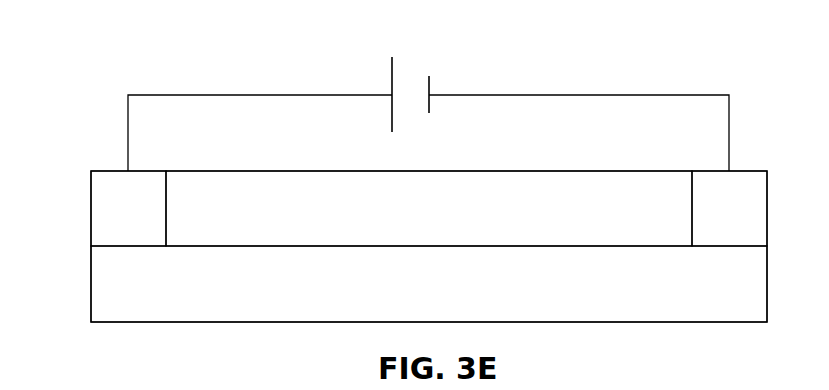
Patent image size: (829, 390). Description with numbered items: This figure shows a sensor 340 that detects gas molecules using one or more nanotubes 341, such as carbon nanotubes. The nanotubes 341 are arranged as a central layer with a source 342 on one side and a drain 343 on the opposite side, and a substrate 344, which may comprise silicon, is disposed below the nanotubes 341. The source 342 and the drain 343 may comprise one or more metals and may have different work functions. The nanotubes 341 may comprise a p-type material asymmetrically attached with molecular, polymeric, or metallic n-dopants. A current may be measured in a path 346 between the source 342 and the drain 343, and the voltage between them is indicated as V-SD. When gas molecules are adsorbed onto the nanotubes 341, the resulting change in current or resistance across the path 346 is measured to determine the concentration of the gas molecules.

The sensor 340 is at (88, 59).
The nanotubes 341 is at (433, 221).
The source 342 is at (150, 220).
The drain 343 is at (749, 221).
The substrate 344 is at (451, 296).
The path 346 is at (580, 81).